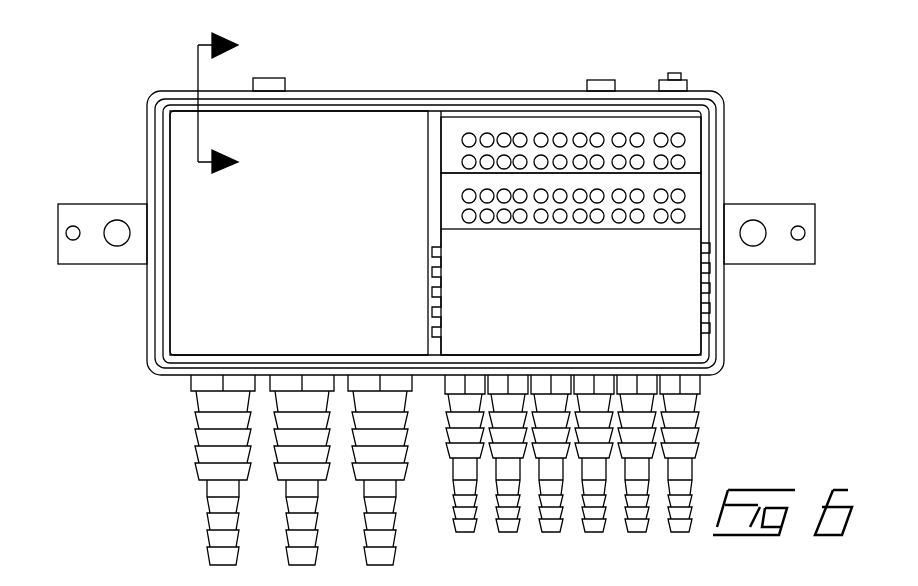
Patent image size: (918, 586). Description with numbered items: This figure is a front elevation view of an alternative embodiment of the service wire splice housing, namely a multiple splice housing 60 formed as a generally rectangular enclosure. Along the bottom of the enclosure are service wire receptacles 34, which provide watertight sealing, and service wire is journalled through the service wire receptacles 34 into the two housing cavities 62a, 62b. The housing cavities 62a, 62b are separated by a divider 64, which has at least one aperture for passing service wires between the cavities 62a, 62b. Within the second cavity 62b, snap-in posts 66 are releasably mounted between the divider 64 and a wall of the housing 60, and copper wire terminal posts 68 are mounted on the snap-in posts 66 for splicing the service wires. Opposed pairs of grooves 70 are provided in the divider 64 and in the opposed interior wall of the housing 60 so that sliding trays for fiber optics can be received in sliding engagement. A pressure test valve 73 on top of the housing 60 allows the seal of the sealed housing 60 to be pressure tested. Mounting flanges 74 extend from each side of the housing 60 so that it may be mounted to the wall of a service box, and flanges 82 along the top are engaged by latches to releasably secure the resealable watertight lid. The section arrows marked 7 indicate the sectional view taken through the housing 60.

The multiple splice housing 60 is at (733, 110).
The housing cavity 62a is at (278, 230).
The housing cavity 62b is at (640, 328).
The divider 64 is at (448, 90).
The snap-in posts 66 is at (690, 137).
The copper wire terminal posts 68 is at (485, 140).
The grooves 70 is at (442, 257).
The pressure test valve 73 is at (677, 72).
The mounting flanges 74 is at (85, 215).
The flanges 82 is at (255, 78).
The service wire receptacles 34 is at (215, 440).
The section line 7- 7 is at (229, 101).